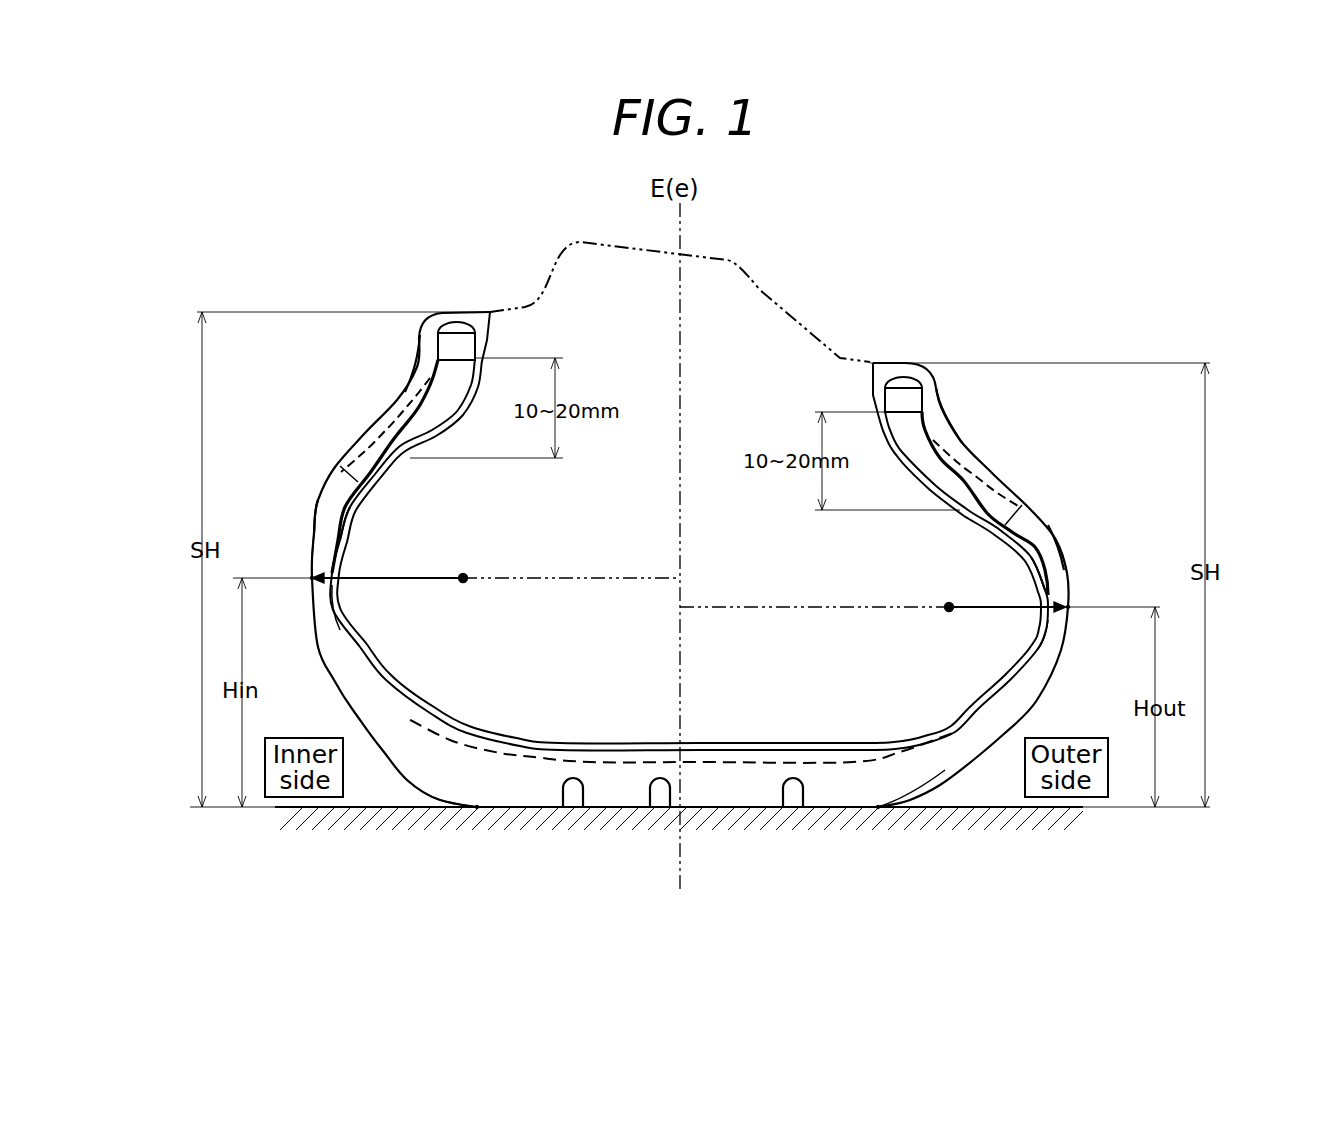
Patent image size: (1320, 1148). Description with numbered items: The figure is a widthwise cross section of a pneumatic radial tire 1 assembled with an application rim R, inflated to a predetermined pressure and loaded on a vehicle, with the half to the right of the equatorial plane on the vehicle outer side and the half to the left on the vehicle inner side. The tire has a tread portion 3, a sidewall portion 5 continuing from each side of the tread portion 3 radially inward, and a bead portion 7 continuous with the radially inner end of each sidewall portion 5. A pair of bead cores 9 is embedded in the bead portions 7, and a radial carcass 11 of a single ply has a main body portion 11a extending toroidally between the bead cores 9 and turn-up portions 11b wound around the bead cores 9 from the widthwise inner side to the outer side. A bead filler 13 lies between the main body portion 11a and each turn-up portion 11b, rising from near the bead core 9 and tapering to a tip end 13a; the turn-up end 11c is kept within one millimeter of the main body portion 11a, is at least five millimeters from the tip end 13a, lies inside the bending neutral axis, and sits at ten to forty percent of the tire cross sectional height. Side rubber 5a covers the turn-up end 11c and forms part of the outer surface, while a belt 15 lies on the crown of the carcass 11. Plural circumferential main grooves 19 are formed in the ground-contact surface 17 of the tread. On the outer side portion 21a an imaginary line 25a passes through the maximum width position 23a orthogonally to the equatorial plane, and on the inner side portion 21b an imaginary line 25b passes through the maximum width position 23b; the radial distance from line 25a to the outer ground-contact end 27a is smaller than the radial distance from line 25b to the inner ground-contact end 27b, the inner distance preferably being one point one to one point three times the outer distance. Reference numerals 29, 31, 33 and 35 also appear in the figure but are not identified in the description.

The pneumatic radial tire 1 is at (684, 585).
The tread portion 3 is at (645, 847).
The sidewall portion 5 is at (302, 570).
The side rubber 5a is at (325, 546).
The bead portion 7 is at (408, 365).
The bead core 9 is at (462, 345).
The radial carcass 11 is at (727, 743).
The main body portion 11a is at (345, 652).
The turn-up portion 11b is at (340, 466).
The turn-up end 11c is at (342, 512).
The bead filler 13 is at (438, 403).
The tip end of bead filler 13a is at (398, 463).
The belt 15 is at (825, 775).
The ground-contact surface 17 is at (742, 816).
The circumferential main groove 19 is at (573, 797).
The tire side portion on vehicle outer side 21a is at (1048, 524).
The tire side portion on vehicle inner side 21b is at (322, 488).
The maximum width position on vehicle outer side 23a is at (1070, 612).
The maximum width position on vehicle inner side 23b is at (310, 582).
The imaginary line on vehicle outer side 25a is at (757, 606).
The imaginary line on vehicle inner side 25b is at (575, 577).
The ground-contact end on vehicle outer side 27a is at (878, 810).
The ground-contact end on vehicle inner side 27b is at (478, 810).
The center land portion 29 is at (697, 807).
The inner land portion 31 is at (617, 807).
The outer buttress portion 33 is at (880, 787).
The inner buttress portion 35 is at (485, 786).
The application rim R is at (765, 278).